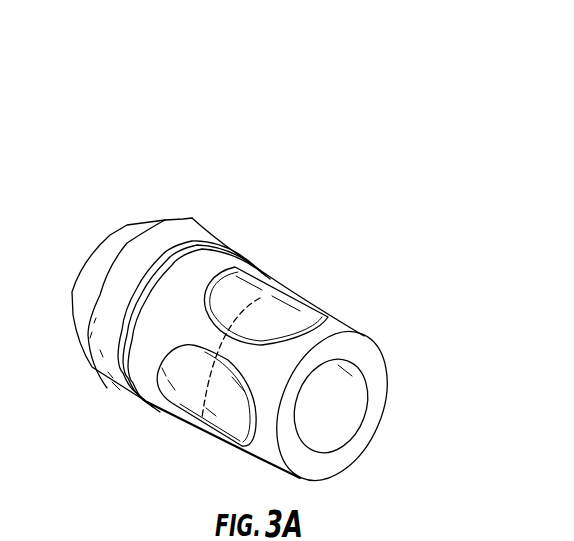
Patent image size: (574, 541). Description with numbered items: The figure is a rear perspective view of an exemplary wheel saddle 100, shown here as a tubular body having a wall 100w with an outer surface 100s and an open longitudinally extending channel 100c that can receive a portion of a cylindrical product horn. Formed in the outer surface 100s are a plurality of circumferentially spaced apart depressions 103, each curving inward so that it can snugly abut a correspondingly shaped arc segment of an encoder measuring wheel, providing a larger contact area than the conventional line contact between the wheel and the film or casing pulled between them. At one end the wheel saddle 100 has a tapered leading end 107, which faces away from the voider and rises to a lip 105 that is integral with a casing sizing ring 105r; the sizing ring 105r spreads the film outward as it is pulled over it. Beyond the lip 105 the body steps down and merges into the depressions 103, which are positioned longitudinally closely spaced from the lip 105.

The wheel saddle 100 is at (182, 88).
The outer surface 100s is at (312, 353).
The longitudinally extending channel 100c is at (332, 417).
The wall 100w is at (317, 467).
The depression 103 is at (260, 297).
The lip 105 is at (162, 237).
The casing sizing ring 105r is at (107, 359).
The tapered leading end 107 is at (110, 247).